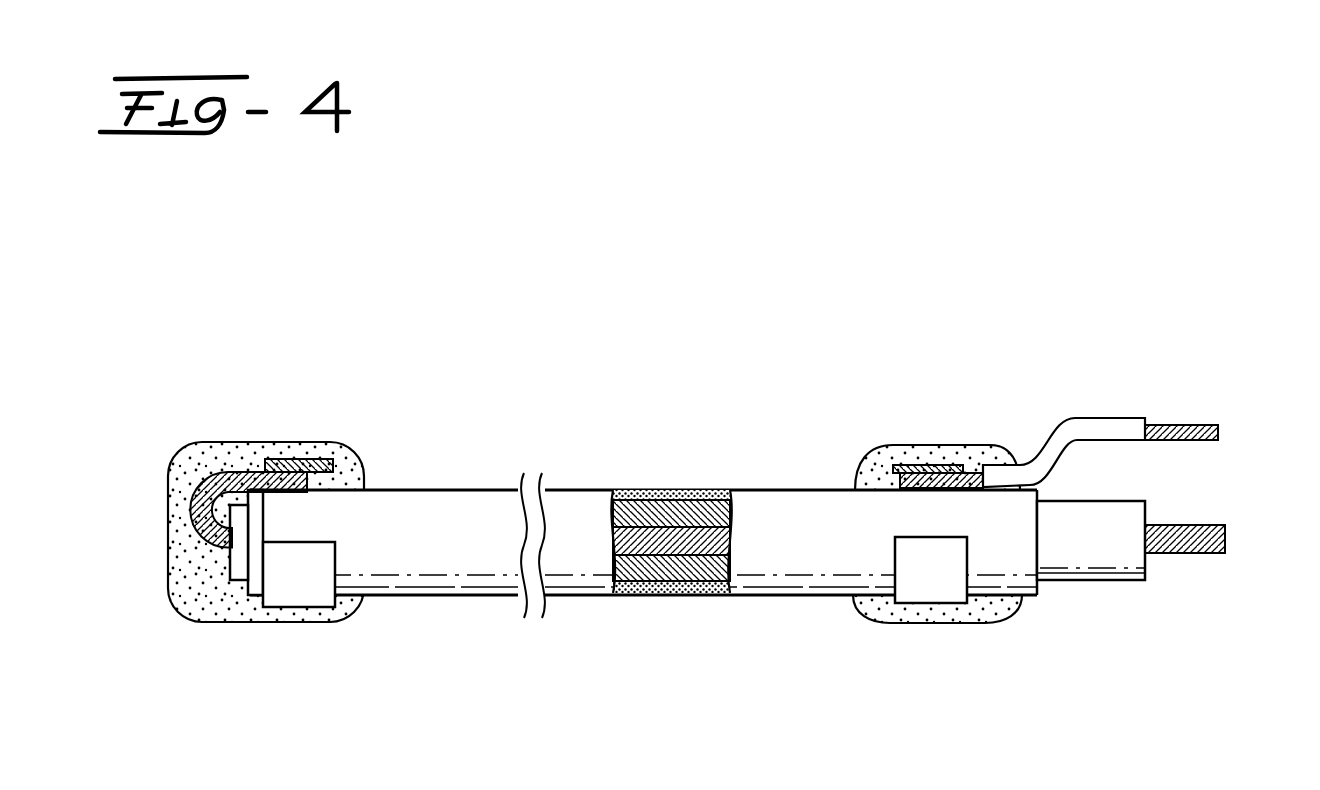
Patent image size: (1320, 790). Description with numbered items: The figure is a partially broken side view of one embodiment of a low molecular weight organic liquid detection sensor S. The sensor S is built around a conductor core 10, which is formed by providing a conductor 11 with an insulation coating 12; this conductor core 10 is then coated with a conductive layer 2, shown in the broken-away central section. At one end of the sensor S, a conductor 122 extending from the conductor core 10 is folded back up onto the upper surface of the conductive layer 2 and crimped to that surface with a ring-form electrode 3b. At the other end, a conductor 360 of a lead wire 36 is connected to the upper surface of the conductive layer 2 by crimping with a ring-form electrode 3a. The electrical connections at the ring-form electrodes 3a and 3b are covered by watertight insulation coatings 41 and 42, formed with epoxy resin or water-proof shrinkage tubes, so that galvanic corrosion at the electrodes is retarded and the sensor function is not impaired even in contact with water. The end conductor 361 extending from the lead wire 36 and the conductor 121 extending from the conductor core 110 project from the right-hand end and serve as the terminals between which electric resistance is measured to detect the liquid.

The sensor S is at (550, 422).
The conductive layer 2 is at (695, 531).
The conductor core 10 is at (695, 483).
The conductor 11 is at (668, 527).
The insulation coating 12 is at (640, 507).
The ring-form electrode 3a is at (902, 623).
The ring-form electrode 3b is at (293, 592).
The lead wire 36 is at (1081, 432).
The conductor of lead wire 360 is at (948, 478).
The end conductor of lead wire 361 is at (1192, 426).
The watertight insulation coating 41 is at (876, 465).
The watertight insulation coating 42 is at (200, 600).
The conductor core 110 is at (1097, 555).
The conductor of conductor core 121 is at (1190, 535).
The conductor extending from conductor core 122 is at (200, 480).